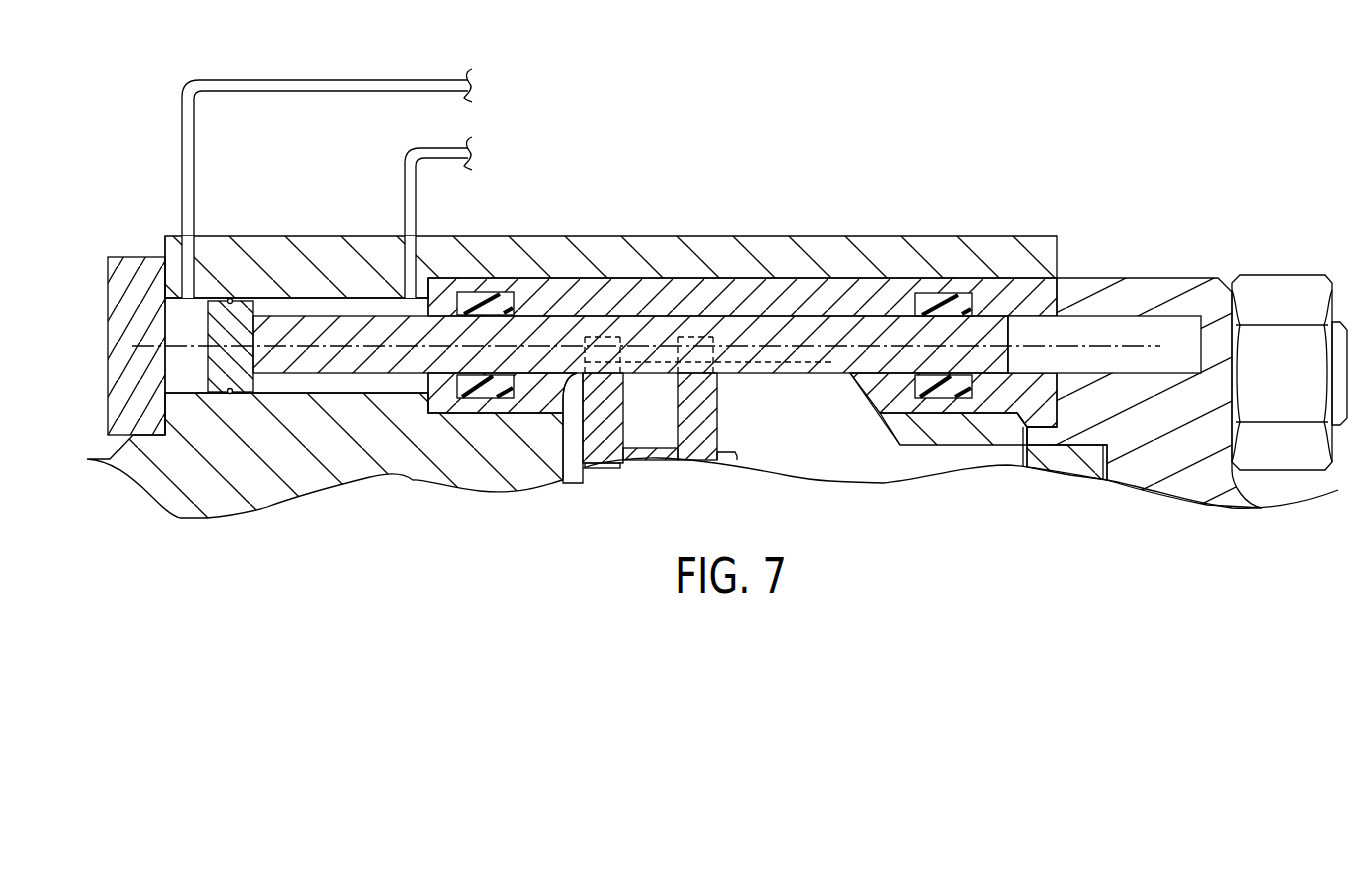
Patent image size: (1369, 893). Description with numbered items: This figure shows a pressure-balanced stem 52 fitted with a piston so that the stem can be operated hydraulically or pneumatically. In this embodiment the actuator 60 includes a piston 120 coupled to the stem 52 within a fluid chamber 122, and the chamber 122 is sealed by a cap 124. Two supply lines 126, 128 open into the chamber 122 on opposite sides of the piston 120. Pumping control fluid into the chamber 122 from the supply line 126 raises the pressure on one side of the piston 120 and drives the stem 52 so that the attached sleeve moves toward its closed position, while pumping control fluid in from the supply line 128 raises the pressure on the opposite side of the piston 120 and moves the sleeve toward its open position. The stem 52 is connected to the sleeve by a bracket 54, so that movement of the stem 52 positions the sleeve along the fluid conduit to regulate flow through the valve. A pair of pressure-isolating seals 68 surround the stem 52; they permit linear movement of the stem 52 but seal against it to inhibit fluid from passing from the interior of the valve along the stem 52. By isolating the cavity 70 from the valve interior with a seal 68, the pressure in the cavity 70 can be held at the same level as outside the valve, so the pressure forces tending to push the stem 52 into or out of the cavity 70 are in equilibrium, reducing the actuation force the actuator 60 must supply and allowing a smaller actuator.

The stem 52 is at (1010, 337).
The bracket 54 is at (728, 417).
The actuator 60 is at (198, 369).
The pressure-isolating seal 68 is at (487, 298).
The cavity 70 is at (1164, 334).
The piston 120 is at (241, 300).
The fluid chamber 122 is at (310, 308).
The cap 124 is at (130, 257).
The supply line 126 is at (339, 79).
The supply line 128 is at (416, 204).